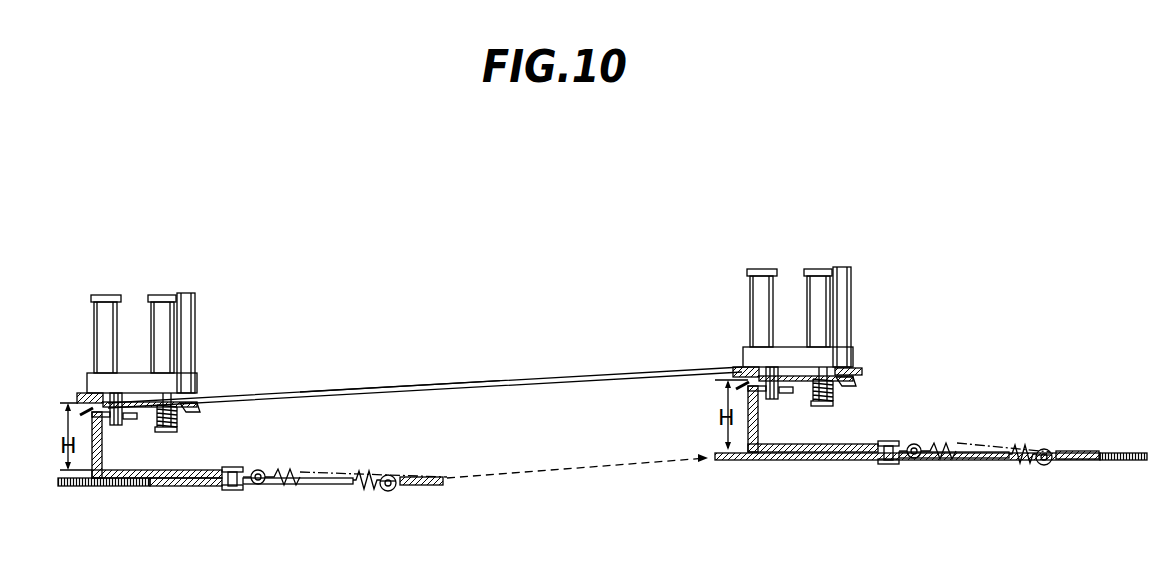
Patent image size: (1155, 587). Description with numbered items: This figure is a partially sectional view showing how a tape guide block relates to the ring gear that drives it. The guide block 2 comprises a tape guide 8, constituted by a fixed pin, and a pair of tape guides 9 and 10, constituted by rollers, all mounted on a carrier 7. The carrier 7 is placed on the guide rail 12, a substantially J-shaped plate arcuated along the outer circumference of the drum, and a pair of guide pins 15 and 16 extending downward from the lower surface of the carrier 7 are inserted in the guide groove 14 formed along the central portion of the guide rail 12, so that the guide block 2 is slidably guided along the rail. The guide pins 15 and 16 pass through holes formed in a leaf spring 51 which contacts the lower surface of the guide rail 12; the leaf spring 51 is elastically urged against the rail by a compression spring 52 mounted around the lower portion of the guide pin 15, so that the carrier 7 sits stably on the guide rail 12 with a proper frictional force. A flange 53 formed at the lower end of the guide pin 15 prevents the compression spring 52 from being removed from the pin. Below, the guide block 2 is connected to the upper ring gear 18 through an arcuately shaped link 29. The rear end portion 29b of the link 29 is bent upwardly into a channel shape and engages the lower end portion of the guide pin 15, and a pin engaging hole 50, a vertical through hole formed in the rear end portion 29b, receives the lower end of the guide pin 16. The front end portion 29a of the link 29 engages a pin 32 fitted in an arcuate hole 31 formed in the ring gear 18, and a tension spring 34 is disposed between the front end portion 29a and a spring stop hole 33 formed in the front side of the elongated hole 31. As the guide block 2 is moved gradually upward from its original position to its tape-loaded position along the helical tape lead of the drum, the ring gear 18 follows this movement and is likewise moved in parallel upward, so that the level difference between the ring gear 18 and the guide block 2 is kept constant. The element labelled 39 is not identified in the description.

The guide block 2 is at (215, 330).
The carrier 7 is at (130, 380).
The tape guide 8 is at (197, 305).
The tape guide 9 is at (158, 295).
The tape guide 10 is at (105, 295).
The guide rail 12 is at (343, 390).
The guide groove 14 is at (418, 385).
The guide pin 15 is at (165, 430).
The guide pin 16 is at (113, 426).
The upper ring gear 18 is at (58, 486).
The link 29 is at (143, 486).
The front end portion 29a is at (210, 486).
The rear end portion 29b is at (94, 455).
The arcuate hole 31 is at (272, 486).
The pin 32 is at (234, 467).
The spring stop hole 33 is at (404, 477).
The tension spring 34 is at (358, 472).
The flange 39 is at (194, 385).
The pin engaging hole 50 is at (127, 419).
The leaf spring 51 is at (197, 403).
The compression spring 52 is at (178, 415).
The flange 53 is at (178, 431).